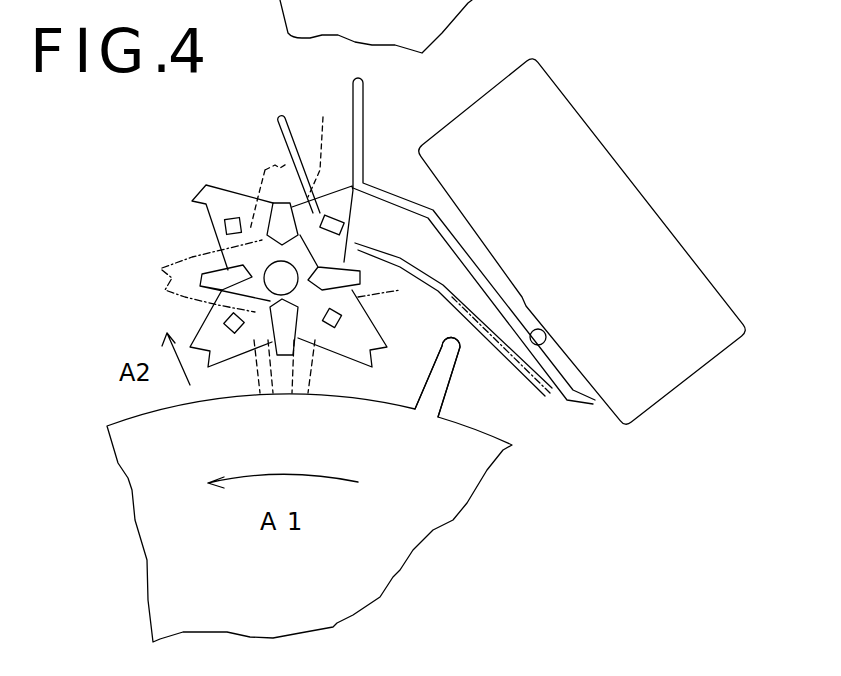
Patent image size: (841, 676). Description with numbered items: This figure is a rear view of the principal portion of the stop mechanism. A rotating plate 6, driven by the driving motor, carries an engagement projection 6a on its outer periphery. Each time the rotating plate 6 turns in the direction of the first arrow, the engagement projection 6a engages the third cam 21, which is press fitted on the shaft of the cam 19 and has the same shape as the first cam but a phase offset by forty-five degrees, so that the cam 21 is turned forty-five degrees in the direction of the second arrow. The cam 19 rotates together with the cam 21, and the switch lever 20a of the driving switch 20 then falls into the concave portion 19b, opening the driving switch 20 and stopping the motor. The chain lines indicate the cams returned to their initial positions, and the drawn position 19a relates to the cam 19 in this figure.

The rotating plate 6 is at (455, 495).
The engagement projection 6a is at (295, 388).
The cam 19 is at (192, 215).
The phantom position of ratchet wheel 19a is at (152, 275).
The concave portion 19b is at (304, 156).
The driving switch 20 is at (570, 124).
The switch lever 20a is at (278, 122).
The third cam 21 is at (272, 210).